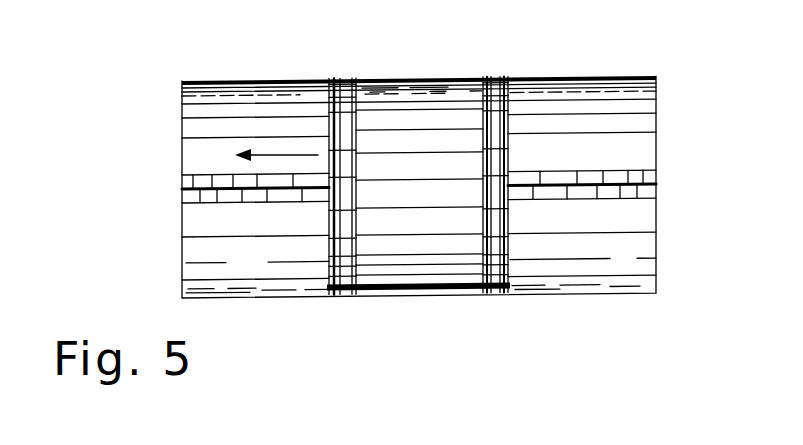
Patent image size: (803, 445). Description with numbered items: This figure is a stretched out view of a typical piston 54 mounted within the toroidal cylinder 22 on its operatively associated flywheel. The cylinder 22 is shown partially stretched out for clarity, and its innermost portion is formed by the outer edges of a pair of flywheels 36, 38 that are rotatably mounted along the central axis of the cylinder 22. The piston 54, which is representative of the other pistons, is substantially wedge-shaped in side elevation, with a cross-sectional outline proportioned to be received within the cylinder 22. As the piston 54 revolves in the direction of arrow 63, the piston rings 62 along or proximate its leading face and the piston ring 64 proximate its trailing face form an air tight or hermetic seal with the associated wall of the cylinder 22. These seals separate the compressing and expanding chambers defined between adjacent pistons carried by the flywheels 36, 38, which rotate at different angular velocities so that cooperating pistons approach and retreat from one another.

The toroidal cylinder 22 is at (185, 113).
The flywheel 38 is at (183, 181).
The flywheel 36 is at (183, 197).
The piston 54 is at (426, 231).
The arrow 63 is at (285, 155).
The piston rings 62 is at (347, 296).
The piston ring 64 is at (500, 296).